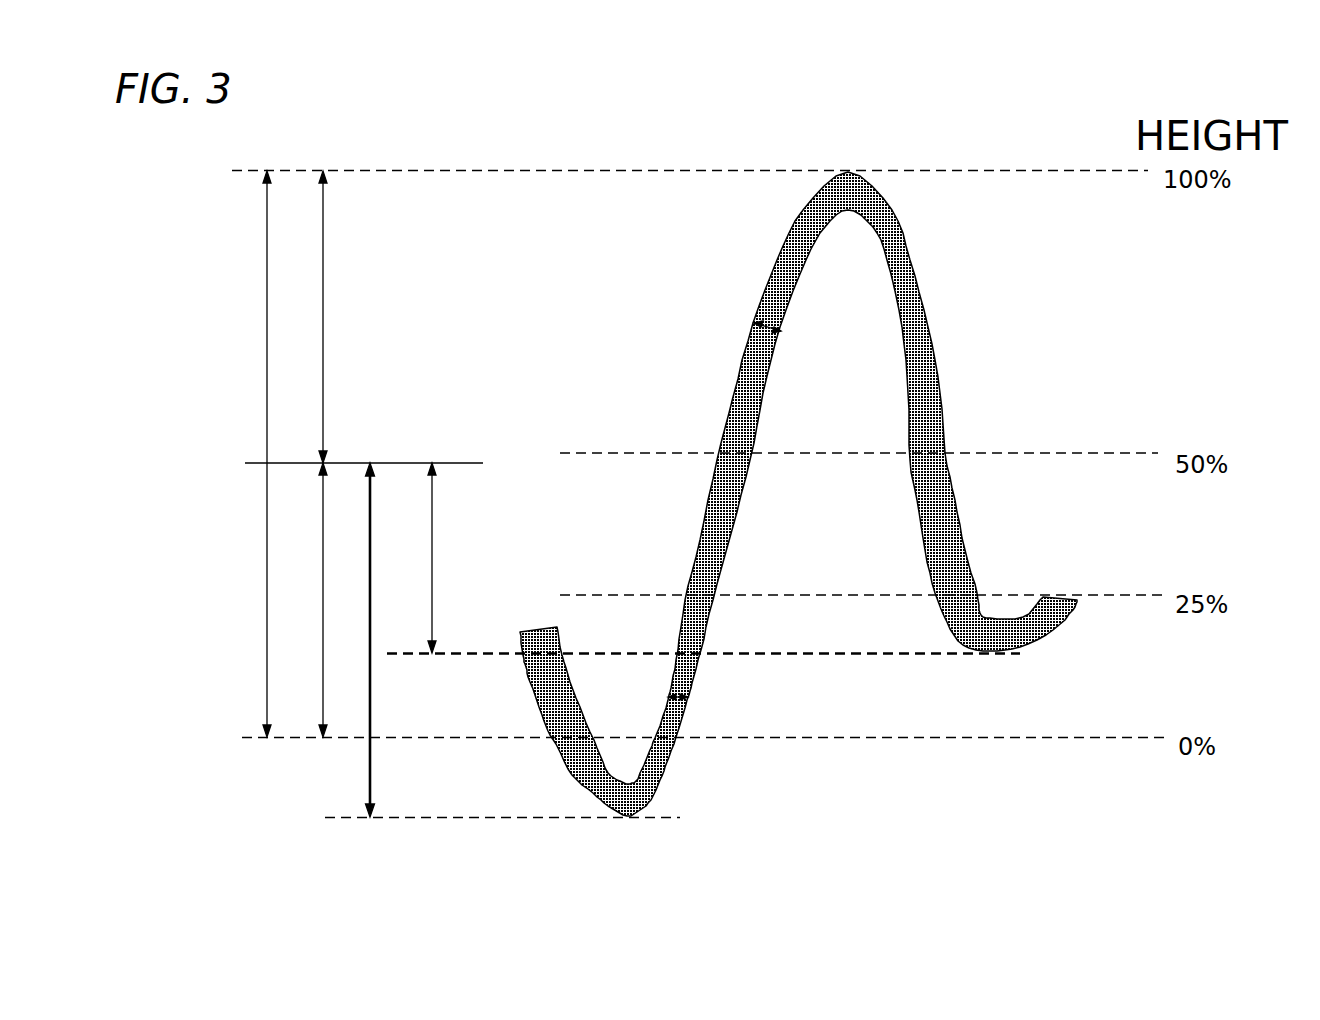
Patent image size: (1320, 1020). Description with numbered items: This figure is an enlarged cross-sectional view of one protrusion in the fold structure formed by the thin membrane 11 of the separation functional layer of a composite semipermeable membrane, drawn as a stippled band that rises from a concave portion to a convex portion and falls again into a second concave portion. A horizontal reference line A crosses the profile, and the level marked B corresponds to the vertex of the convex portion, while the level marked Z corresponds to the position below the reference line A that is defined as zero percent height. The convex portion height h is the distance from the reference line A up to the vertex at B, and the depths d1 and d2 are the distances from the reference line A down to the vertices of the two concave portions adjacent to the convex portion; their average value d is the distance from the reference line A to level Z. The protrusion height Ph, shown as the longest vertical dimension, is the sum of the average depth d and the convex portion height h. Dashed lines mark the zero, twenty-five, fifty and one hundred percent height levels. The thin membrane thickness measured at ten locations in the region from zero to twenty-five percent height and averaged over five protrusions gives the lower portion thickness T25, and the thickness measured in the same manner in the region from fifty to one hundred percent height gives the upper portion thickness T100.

The thin membrane 11 is at (901, 127).
The peak height level line B is at (674, 173).
The reference line A is at (343, 463).
The base (0%) level line Z is at (684, 743).
The protrusion height Ph is at (249, 454).
The convex portion height h is at (313, 317).
The average depth d is at (312, 600).
The depth of concave portion d1 is at (354, 640).
The depth of concave portion d2 is at (414, 558).
The upper portion thickness T100 is at (731, 324).
The lower portion thickness T25 is at (644, 697).